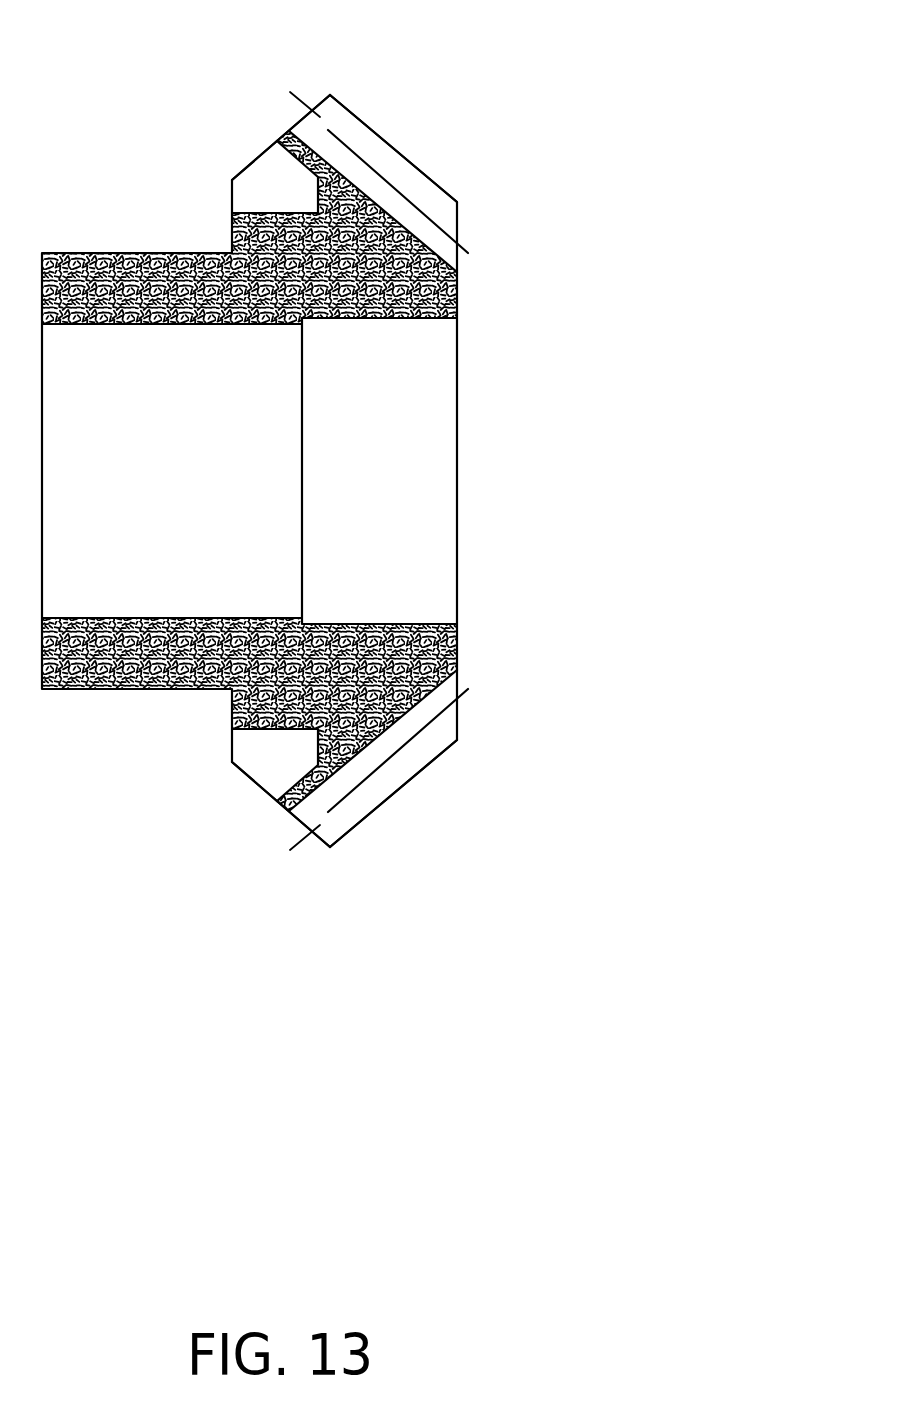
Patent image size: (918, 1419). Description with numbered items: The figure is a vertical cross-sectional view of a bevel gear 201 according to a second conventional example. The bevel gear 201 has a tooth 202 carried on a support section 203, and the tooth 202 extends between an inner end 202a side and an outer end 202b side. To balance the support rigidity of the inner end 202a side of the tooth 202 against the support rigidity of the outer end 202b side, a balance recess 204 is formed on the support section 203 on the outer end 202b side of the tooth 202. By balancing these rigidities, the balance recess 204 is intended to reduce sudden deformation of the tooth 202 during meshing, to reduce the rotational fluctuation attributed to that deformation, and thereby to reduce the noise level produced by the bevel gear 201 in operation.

The bevel gear 201 is at (483, 248).
The tooth 202 is at (395, 157).
The inner end 202a is at (457, 202).
The outer end 202b is at (330, 96).
The support section 203 is at (247, 231).
The balance recess 204 is at (258, 178).